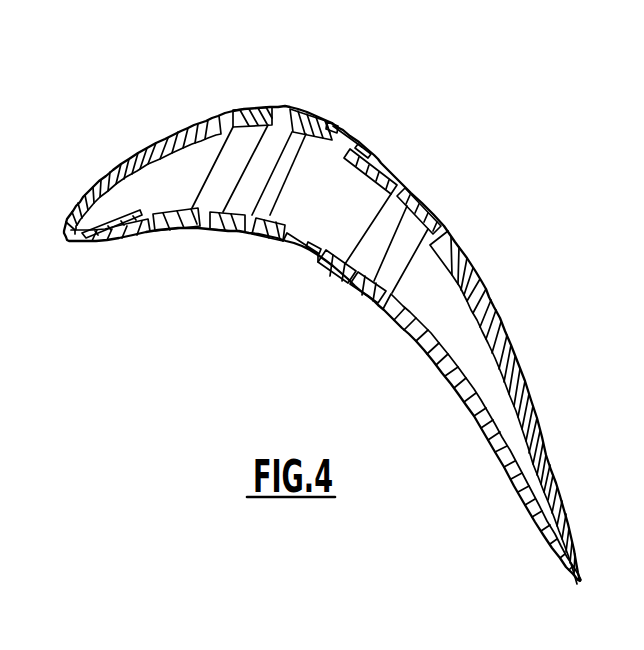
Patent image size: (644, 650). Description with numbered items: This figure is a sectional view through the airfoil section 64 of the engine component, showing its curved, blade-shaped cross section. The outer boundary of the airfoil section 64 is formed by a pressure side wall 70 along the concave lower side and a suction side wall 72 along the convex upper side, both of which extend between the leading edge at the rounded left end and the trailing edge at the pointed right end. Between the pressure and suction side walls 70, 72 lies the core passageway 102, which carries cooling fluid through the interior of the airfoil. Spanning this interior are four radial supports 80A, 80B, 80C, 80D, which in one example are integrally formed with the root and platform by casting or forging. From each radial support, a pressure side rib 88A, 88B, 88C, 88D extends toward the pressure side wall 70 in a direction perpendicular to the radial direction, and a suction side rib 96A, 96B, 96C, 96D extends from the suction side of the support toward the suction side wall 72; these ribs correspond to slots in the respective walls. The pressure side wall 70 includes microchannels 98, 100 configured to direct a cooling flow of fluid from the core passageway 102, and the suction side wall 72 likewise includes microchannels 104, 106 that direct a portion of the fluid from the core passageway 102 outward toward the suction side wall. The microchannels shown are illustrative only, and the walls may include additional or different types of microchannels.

The airfoil section 64 is at (114, 281).
The pressure side wall 70 is at (224, 262).
The suction side wall 72 is at (292, 92).
The radial support 80A is at (212, 167).
The radial support 80B is at (273, 153).
The radial support 80C is at (413, 250).
The radial support 80D is at (385, 215).
The pressure side rib 88A is at (200, 215).
The pressure side rib 88B is at (247, 223).
The pressure side rib 88C is at (346, 283).
The pressure side rib 88D is at (375, 298).
The suction side rib 96A is at (228, 110).
The suction side rib 96B is at (283, 112).
The suction side rib 96C is at (407, 180).
The suction side rib 96D is at (438, 228).
The microchannel 98 is at (143, 217).
The microchannel 100 is at (300, 243).
The core passageway 102 is at (169, 202).
The microchannel 104 is at (150, 160).
The microchannel 106 is at (347, 146).